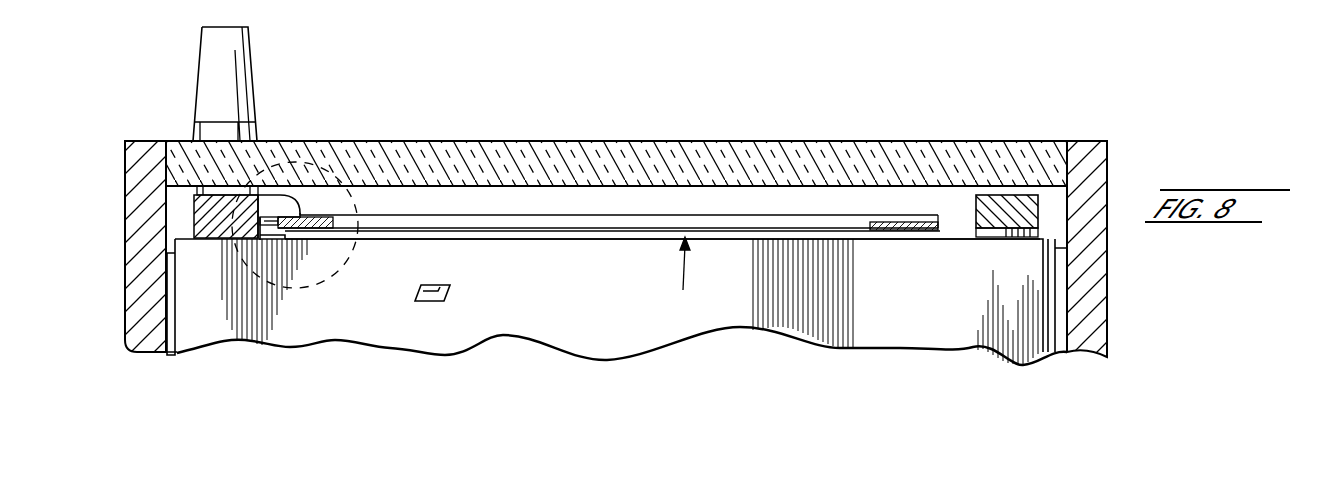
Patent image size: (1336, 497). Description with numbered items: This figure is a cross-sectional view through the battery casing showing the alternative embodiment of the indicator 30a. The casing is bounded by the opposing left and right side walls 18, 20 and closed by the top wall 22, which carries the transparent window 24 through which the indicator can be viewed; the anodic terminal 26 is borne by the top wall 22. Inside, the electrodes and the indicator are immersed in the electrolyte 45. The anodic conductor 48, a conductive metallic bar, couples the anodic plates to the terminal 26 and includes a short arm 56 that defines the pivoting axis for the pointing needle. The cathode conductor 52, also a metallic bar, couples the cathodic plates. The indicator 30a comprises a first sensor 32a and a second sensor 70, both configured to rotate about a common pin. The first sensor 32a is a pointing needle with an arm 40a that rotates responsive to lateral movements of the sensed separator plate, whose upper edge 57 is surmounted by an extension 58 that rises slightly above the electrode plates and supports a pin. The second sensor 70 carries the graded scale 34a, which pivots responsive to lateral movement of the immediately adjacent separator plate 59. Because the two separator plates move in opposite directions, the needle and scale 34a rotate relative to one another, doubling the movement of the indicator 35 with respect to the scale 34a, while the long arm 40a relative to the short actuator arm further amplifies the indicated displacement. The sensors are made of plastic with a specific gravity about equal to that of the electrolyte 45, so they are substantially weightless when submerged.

The left side wall 18 is at (148, 316).
The right side wall 20 is at (1087, 258).
The top wall 22 is at (713, 142).
The transparent window 24 is at (527, 163).
The anodic terminal 26 is at (215, 82).
The indicator 30a is at (977, 112).
The first sensor 32a is at (642, 215).
The graded scale 34a is at (893, 232).
The indicator 35 is at (915, 213).
The arm 40a is at (577, 230).
The electrolyte 45 is at (170, 275).
The anodic conductor 48 is at (205, 215).
The cathode conductor 52 is at (1005, 210).
The short arm 56 is at (274, 200).
The upper edge 57 is at (415, 238).
The extension 58 is at (278, 240).
The separator plate 59 is at (543, 297).
The second sensor 70 is at (683, 281).